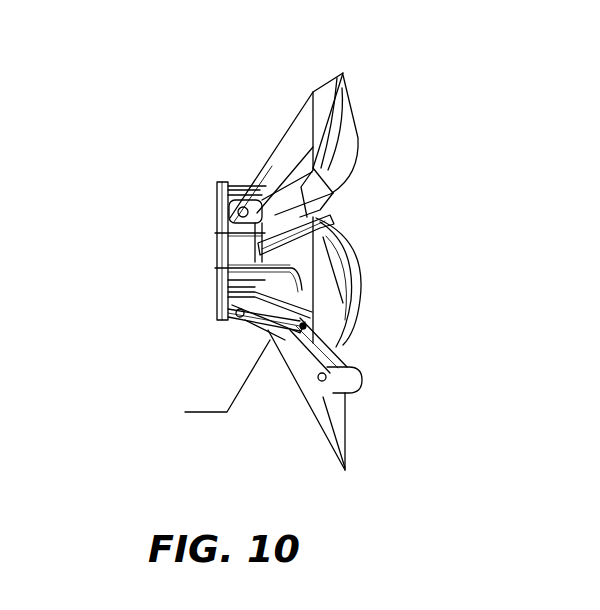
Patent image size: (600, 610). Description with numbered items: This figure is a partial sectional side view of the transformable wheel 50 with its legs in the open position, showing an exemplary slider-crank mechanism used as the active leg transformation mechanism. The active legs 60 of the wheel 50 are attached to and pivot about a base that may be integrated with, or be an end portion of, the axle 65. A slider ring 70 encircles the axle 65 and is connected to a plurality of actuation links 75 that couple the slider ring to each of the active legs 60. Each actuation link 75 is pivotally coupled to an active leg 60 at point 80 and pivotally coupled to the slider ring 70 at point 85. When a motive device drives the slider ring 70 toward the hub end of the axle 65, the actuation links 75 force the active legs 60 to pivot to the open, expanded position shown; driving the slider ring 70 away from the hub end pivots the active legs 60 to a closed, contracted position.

The transformable wheel 50 is at (220, 90).
The active legs 60 is at (317, 372).
The axle 65 is at (215, 268).
The slider ring 70 is at (216, 186).
The actuation links 75 is at (253, 327).
The pivot point on active leg 80 is at (305, 326).
The pivot point on slider ring 85 is at (215, 313).